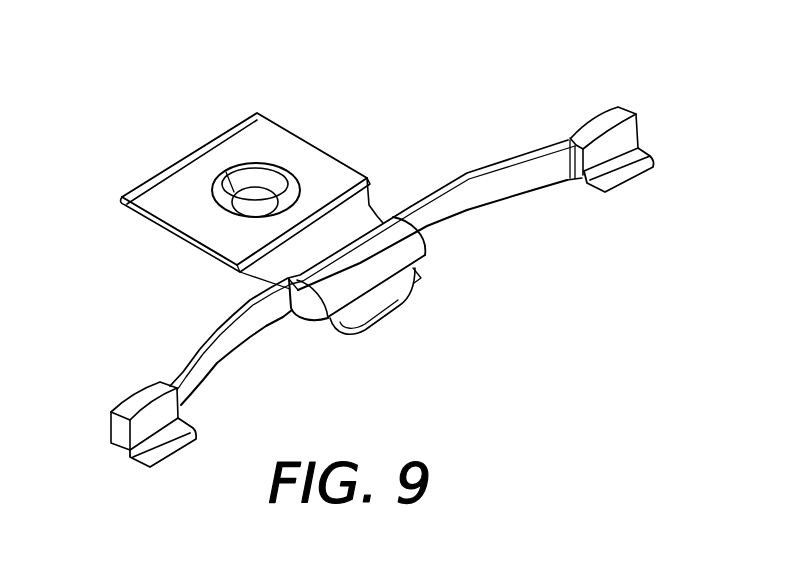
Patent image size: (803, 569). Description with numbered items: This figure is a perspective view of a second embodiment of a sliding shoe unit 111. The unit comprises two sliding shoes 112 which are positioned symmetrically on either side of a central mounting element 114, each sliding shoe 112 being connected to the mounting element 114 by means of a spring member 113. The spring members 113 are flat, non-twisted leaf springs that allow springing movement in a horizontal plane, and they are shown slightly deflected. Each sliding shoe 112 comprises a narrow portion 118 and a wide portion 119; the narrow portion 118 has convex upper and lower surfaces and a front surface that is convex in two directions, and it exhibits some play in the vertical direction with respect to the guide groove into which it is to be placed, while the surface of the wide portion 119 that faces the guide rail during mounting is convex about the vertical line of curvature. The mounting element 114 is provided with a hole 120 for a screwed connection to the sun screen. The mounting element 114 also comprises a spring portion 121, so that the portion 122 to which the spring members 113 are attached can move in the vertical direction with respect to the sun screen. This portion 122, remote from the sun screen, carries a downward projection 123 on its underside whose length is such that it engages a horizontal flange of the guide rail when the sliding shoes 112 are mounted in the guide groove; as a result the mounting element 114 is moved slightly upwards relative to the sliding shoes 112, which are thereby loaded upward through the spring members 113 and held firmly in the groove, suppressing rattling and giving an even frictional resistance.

The sliding shoe unit 111 is at (381, 150).
The sliding shoe 112 is at (385, 303).
The spring member 113 is at (467, 190).
The mounting element 114 is at (127, 209).
The narrow portion 118 is at (618, 170).
The wide portion 119 is at (628, 140).
The hole 120 is at (255, 200).
The spring portion 121 is at (278, 267).
The portion to which the spring members are attached 122 is at (304, 305).
The downward projection 123 is at (372, 307).